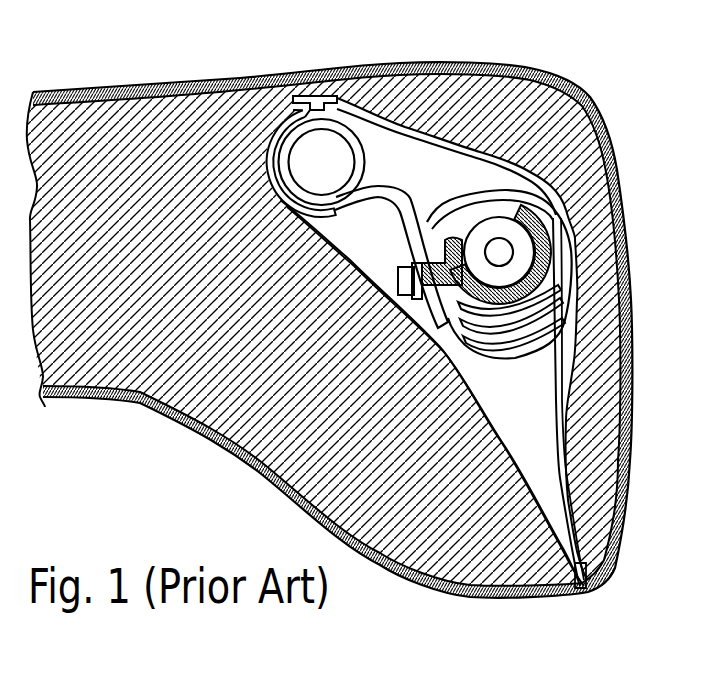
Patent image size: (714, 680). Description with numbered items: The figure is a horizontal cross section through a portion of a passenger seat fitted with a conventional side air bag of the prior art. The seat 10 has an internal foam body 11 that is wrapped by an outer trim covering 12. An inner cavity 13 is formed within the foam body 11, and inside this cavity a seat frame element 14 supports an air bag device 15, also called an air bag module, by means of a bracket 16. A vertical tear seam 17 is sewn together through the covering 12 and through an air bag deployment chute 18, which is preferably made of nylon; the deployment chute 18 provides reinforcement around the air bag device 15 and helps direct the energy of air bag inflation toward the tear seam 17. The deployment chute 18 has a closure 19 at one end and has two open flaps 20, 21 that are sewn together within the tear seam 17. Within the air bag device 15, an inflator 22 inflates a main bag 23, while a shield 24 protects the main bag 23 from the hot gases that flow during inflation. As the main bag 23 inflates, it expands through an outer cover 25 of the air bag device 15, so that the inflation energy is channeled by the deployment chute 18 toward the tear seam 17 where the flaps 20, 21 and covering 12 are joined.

The seat 10 is at (186, 445).
The foam body 11 is at (120, 133).
The outer trim covering 12 is at (530, 73).
The inner cavity 13 is at (430, 130).
The seat frame element 14 is at (293, 137).
The air bag device 15 is at (452, 198).
The bracket 16 is at (383, 202).
The tear seam 17 is at (598, 590).
The air bag deployment chute 18 is at (363, 117).
The closure 19 is at (313, 96).
The open flap 20 is at (530, 460).
The open flap 21 is at (553, 447).
The inflator 22 is at (525, 218).
The main bag 23 is at (560, 307).
The shield 24 is at (550, 247).
The outer cover 25 is at (560, 335).